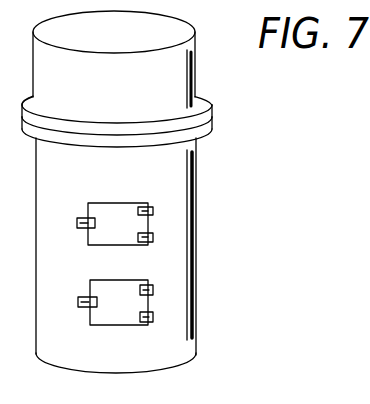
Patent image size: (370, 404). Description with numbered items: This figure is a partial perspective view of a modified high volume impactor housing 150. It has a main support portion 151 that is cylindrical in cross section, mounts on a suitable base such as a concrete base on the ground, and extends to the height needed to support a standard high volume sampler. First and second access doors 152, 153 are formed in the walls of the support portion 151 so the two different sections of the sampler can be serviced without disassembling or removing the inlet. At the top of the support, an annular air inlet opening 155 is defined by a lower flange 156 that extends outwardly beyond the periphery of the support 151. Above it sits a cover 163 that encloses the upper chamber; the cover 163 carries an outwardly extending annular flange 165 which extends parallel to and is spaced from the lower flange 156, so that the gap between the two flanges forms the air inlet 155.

The high volume impactor housing 150 is at (150, 192).
The main support portion 151 is at (182, 298).
The first access door 152 is at (112, 210).
The second access door 153 is at (122, 315).
The annular air inlet opening 155 is at (203, 120).
The lower flange 156 is at (204, 134).
The cover 163 is at (182, 72).
The annular flange 165 is at (198, 107).